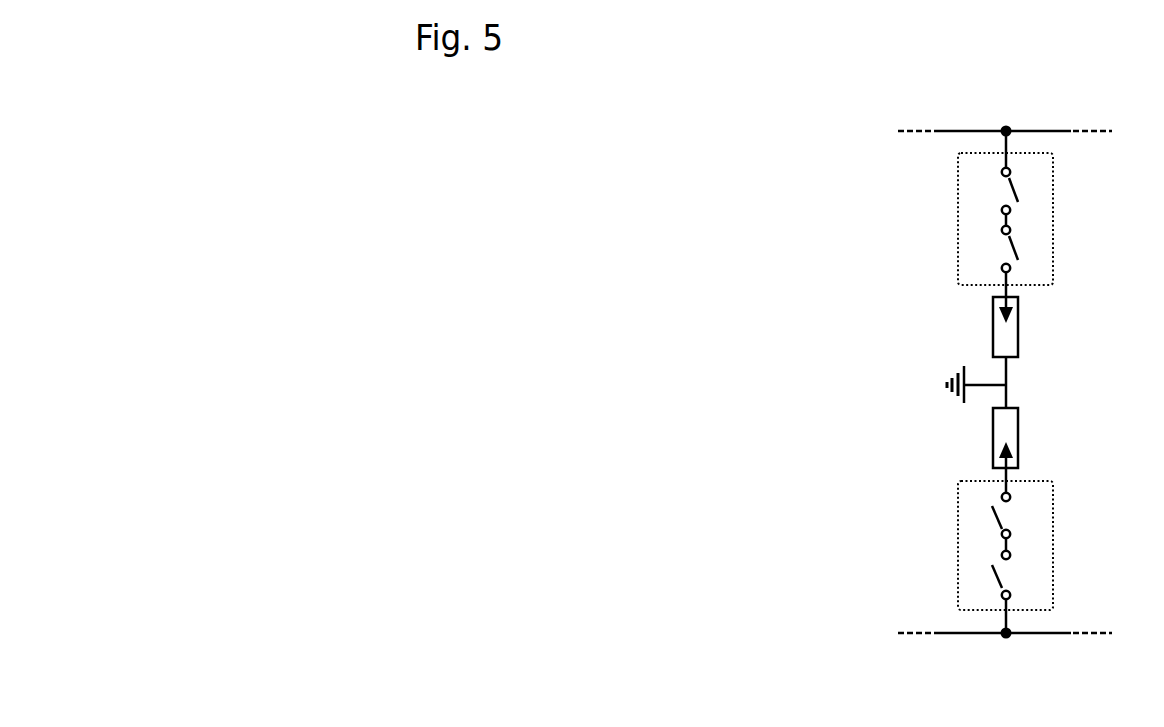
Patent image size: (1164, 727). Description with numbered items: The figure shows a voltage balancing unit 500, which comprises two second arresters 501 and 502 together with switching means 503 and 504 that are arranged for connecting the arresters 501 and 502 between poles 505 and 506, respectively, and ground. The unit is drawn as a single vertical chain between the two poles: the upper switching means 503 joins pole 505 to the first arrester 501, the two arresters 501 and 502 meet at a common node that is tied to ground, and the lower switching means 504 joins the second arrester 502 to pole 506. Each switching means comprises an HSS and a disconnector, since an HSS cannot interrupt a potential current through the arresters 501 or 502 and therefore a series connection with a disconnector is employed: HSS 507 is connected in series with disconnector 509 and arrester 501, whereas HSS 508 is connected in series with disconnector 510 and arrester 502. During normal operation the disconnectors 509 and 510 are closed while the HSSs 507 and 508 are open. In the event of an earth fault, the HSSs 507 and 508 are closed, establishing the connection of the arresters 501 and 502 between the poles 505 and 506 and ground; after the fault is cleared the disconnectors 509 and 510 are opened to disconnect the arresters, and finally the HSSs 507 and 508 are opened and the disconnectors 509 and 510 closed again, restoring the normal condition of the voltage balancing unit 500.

The voltage balancing unit 500 is at (650, 677).
The second arrester 501 is at (1039, 327).
The second arrester 502 is at (1039, 438).
The switching means 503 is at (1015, 219).
The switching means 504 is at (1015, 545).
The pole 505 is at (970, 129).
The pole 506 is at (970, 637).
The HSS 507 is at (1030, 189).
The HSS 508 is at (1030, 580).
The disconnector 509 is at (1030, 248).
The disconnector 510 is at (1030, 521).